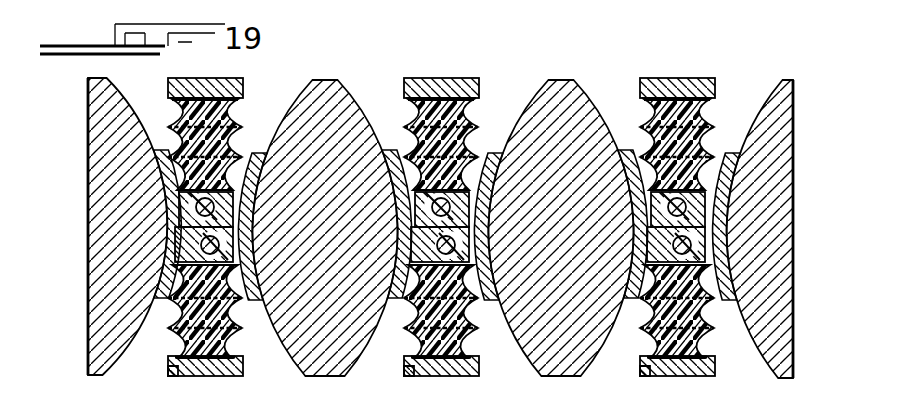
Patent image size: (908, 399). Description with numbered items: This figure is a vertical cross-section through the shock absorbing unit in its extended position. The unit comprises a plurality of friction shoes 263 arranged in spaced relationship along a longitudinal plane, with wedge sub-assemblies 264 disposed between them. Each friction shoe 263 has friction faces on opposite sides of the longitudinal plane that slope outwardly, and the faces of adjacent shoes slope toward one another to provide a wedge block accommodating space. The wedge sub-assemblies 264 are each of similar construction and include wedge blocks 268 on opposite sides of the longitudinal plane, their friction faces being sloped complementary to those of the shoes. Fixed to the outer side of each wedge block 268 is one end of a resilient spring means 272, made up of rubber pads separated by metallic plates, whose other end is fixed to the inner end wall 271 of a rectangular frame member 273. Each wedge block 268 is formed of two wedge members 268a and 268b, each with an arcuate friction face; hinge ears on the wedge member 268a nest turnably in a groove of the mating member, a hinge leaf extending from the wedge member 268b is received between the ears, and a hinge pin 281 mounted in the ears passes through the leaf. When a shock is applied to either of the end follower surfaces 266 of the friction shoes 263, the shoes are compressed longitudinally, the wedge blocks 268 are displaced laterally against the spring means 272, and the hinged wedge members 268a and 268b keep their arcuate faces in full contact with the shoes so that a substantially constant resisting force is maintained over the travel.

The friction shoe 263 is at (112, 96).
The wedge sub-assembly 264 is at (230, 80).
The end follower surface 266 is at (88, 284).
The wedge block 268 is at (454, 217).
The wedge member 268a is at (466, 312).
The wedge member 268b is at (422, 345).
The inner end wall 271 is at (186, 341).
The resilient spring means 272 is at (234, 349).
The rectangular frame member 273 is at (170, 371).
The hinge pin 281 is at (243, 195).